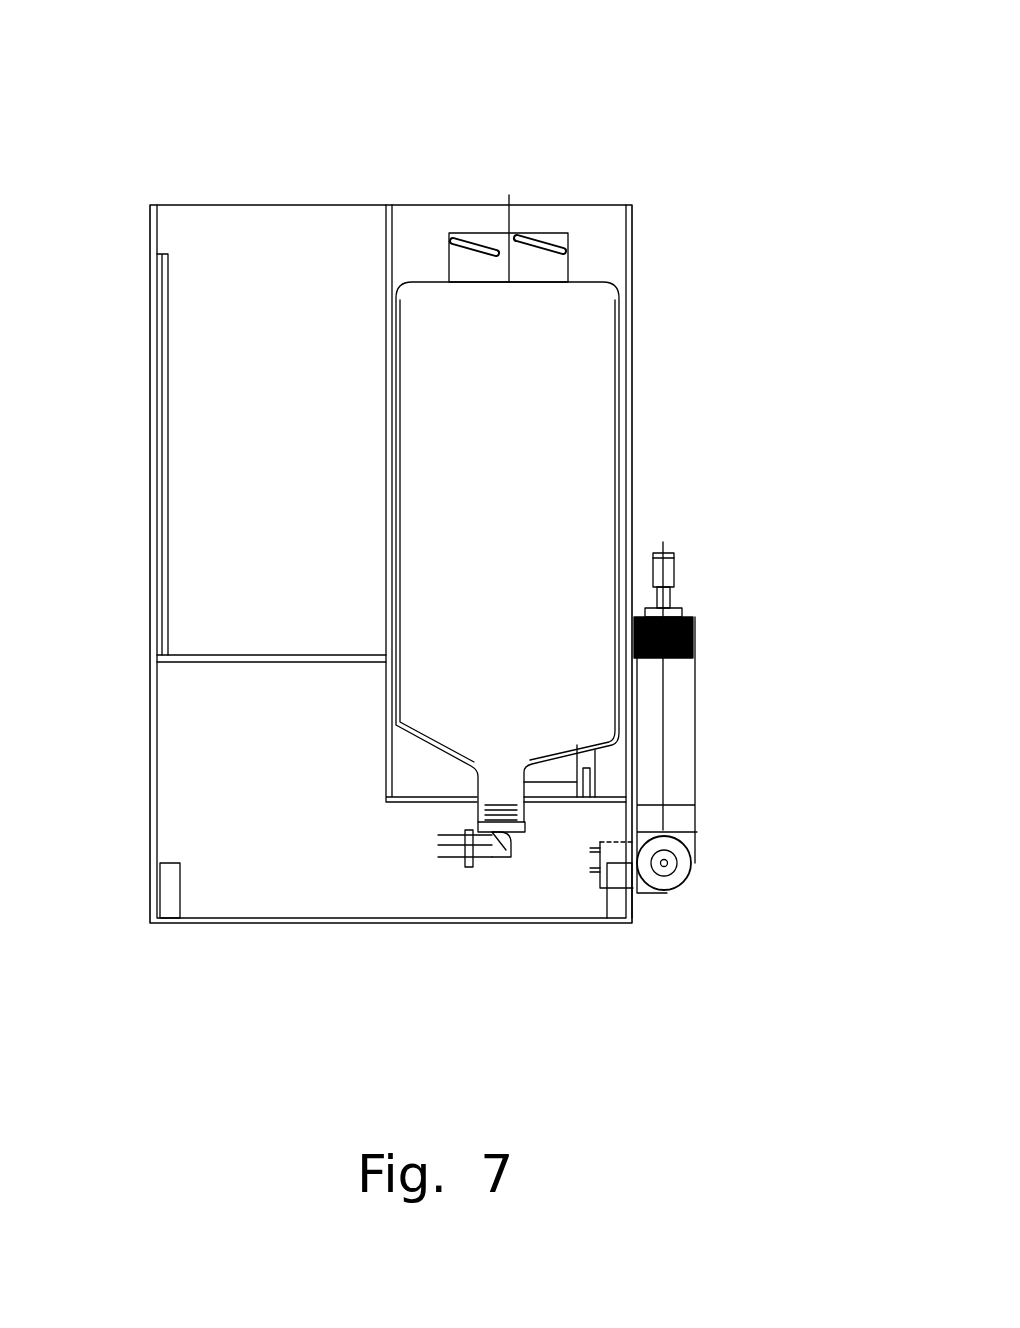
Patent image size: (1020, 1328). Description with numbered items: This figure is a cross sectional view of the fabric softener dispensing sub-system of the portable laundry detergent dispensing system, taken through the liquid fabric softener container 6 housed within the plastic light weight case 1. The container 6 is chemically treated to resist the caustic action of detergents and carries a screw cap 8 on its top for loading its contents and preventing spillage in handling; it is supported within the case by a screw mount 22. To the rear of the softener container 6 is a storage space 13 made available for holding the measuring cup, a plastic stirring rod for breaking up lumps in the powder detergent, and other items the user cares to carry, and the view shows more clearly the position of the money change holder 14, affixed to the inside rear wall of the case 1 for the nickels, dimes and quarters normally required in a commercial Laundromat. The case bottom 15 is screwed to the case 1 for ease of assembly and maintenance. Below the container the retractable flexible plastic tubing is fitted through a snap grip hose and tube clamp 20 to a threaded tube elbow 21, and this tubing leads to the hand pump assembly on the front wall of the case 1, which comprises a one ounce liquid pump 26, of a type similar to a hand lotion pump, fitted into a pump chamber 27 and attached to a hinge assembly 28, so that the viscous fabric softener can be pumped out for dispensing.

The case 1 is at (636, 386).
The liquid fabric softener container 6 is at (586, 279).
The screw cap 8 is at (541, 229).
The storage space 13 is at (320, 257).
The money change holder 14 is at (176, 247).
The case bottom 15 is at (207, 927).
The snap grip hose and tube clamp 20 is at (466, 865).
The threaded tube elbow 21 is at (508, 862).
The screw mount 22 is at (599, 783).
The liquid pump 26 is at (673, 543).
The pump chamber 27 is at (678, 711).
The hinge assembly 28 is at (685, 891).